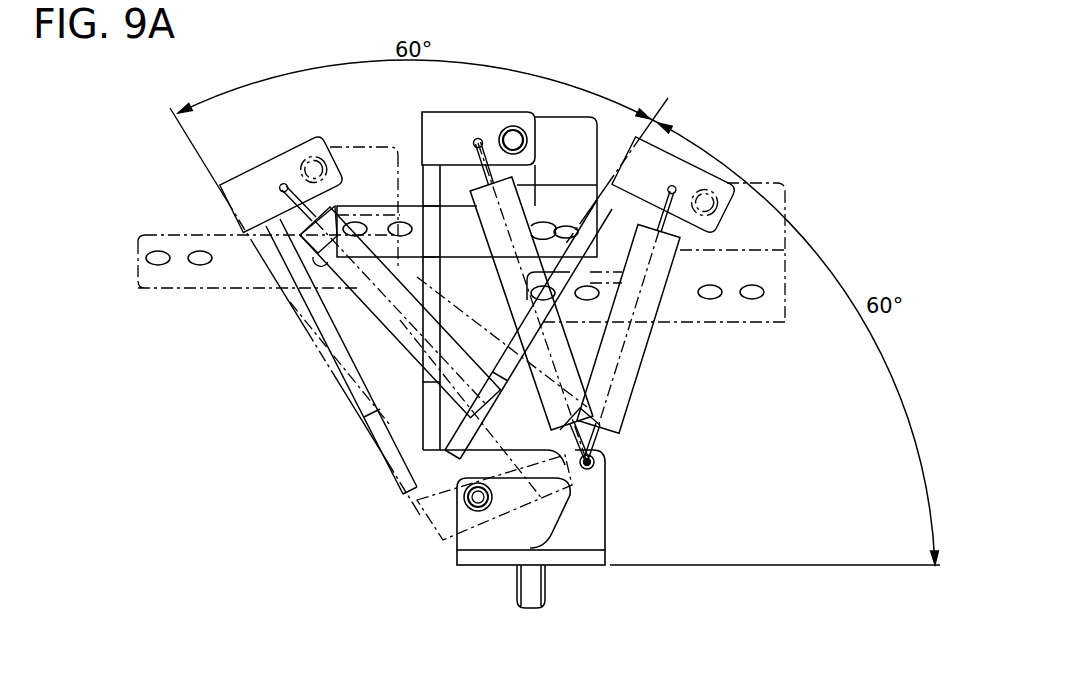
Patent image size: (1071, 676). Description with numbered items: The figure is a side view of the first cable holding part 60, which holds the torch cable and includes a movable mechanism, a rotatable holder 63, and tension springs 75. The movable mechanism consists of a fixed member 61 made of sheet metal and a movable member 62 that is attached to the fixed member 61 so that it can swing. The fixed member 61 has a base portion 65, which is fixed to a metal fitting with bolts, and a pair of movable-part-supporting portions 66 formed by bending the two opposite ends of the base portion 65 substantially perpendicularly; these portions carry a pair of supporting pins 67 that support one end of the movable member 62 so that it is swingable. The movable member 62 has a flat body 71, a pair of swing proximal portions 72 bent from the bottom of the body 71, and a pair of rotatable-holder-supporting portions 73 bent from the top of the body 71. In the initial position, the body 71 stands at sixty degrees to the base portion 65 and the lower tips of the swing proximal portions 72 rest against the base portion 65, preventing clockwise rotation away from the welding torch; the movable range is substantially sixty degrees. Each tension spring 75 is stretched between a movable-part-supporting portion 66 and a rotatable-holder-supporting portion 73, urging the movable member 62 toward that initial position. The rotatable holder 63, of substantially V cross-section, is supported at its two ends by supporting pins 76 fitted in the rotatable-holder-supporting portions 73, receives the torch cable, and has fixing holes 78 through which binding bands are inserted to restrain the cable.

The cable holding part 60 is at (806, 86).
The fixed member 61 is at (470, 572).
The movable member 62 is at (415, 373).
The rotatable holder 63 is at (568, 110).
The base portion 65 is at (500, 562).
The movable-part-supporting portions 66 is at (592, 518).
The supporting pins 67 is at (478, 497).
The body 71 is at (421, 316).
The swing proximal portions 72 is at (580, 530).
The rotatable-holder-supporting portions 73 is at (458, 122).
The tension springs 75 is at (568, 365).
The supporting pins 76 is at (513, 126).
The fixing holes 78 is at (566, 228).